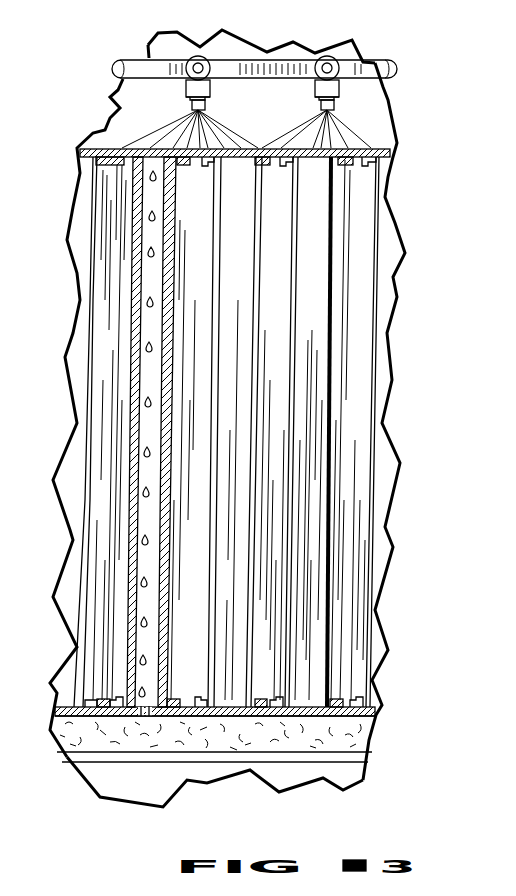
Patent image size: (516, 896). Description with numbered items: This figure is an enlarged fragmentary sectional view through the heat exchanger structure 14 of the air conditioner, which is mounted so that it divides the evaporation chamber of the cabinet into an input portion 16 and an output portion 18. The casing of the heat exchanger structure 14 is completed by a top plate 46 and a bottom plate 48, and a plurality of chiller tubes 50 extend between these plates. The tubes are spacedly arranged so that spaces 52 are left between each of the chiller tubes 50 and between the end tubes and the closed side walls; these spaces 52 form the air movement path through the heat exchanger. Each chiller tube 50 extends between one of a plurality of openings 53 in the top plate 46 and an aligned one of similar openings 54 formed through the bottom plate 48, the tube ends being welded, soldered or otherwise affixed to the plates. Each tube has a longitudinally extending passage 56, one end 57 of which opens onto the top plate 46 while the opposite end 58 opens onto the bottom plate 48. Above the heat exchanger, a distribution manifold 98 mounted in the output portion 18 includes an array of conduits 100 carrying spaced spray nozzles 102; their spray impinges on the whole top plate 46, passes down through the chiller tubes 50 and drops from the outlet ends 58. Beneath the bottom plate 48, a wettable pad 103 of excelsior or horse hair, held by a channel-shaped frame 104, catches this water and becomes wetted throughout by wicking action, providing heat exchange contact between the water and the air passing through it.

The heat exchanger structure 14 is at (372, 149).
The input portion 16 is at (73, 778).
The output portion 18 is at (112, 98).
The top plate 46 is at (382, 147).
The bottom plate 48 is at (381, 720).
The chiller tubes 50 is at (130, 255).
The spaces 52 is at (190, 377).
The openings 53 is at (128, 160).
The openings 54 is at (90, 704).
The longitudinally extending passage 56 is at (136, 447).
The end of passage 57 is at (157, 173).
The opposite end 58 is at (146, 716).
The distribution manifold 98 is at (161, 47).
The conduits 100 is at (120, 80).
The spray nozzles 102 is at (210, 97).
The wettable pad 103 is at (363, 740).
The channel-shaped frame 104 is at (356, 770).